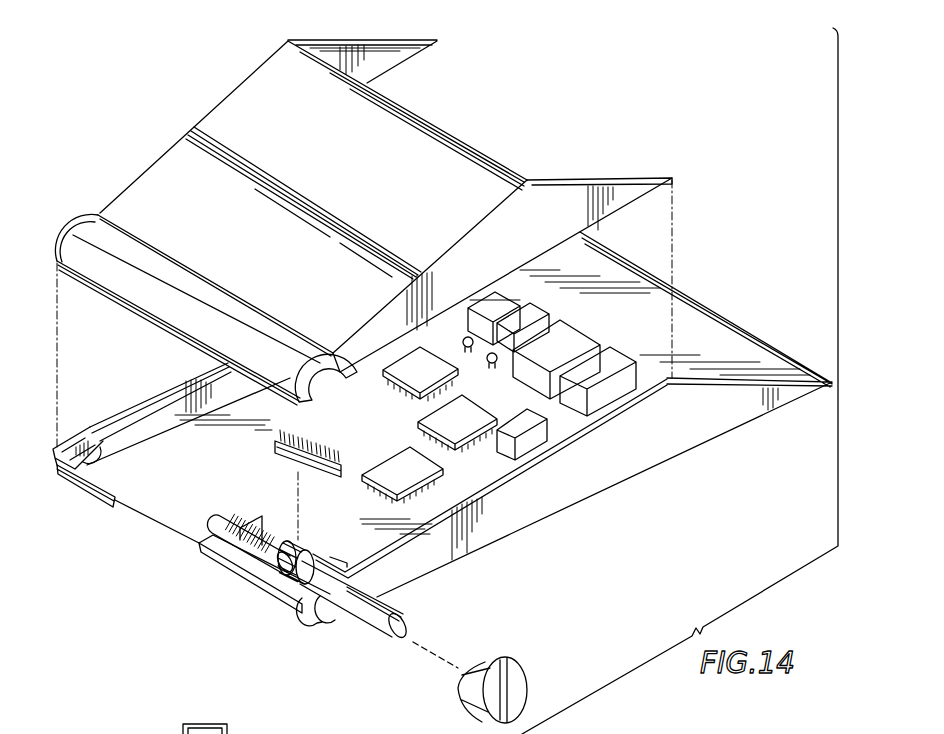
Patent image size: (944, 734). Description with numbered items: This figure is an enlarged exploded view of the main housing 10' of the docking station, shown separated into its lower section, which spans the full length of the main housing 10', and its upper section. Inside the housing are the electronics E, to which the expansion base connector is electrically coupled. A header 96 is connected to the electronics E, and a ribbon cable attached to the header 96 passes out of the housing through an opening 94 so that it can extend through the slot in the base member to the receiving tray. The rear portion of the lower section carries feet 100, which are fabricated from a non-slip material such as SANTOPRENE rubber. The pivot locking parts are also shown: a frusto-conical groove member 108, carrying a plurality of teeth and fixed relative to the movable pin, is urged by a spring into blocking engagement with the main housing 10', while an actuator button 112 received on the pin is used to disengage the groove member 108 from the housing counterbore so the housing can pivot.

The main housing 10' is at (363, 222).
The opening 94 is at (157, 530).
The header 96 is at (273, 450).
The feet 100 is at (812, 392).
The frusto-conical groove member 108 is at (257, 587).
The actuator button 112 is at (512, 666).
The electronics E is at (485, 478).